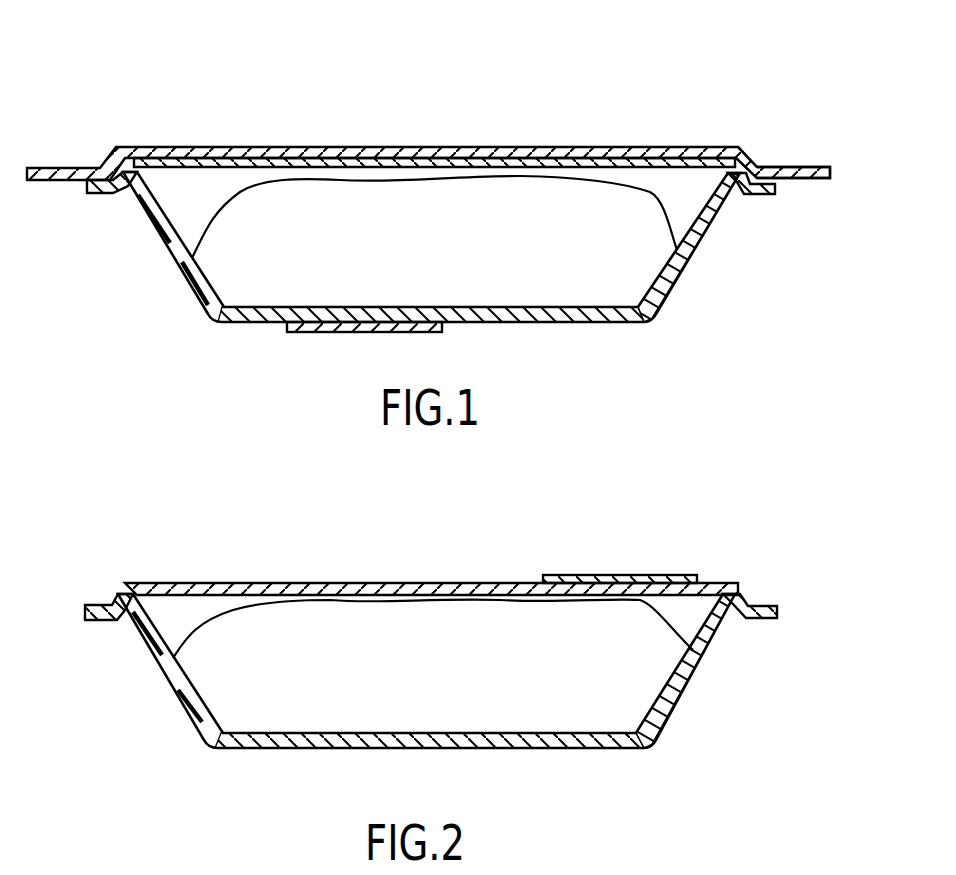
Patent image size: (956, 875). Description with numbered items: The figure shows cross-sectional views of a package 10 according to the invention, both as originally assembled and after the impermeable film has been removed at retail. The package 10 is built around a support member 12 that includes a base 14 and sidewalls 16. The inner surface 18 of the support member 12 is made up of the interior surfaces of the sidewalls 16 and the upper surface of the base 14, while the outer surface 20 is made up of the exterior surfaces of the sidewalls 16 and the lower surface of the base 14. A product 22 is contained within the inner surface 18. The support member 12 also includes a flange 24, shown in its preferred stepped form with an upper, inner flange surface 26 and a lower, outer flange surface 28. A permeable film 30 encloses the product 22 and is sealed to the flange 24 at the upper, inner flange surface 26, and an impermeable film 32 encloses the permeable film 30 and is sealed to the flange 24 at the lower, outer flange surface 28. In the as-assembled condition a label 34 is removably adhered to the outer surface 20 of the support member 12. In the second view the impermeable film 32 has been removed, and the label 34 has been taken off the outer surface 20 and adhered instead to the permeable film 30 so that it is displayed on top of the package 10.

In FIG. 1, the package 10 is at (693, 74).
In FIG. 2, the package 10 is at (727, 506).
In FIG. 1, the support member 12 is at (178, 294).
In FIG. 2, the support member 12 is at (690, 718).
In FIG. 1, the base 14 is at (262, 320).
In FIG. 2, the base 14 is at (287, 742).
In FIG. 1, the sidewalls 16 is at (148, 216).
In FIG. 2, the sidewalls 16 is at (175, 659).
In FIG. 1, the inner surface 18 is at (190, 200).
In FIG. 1, the outer surface 20 is at (684, 286).
In FIG. 2, the outer surface 20 is at (559, 762).
In FIG. 1, the product 22 is at (480, 230).
In FIG. 2, the product 22 is at (478, 658).
In FIG. 1, the flange 24 is at (800, 188).
In FIG. 1, the upper, inner flange surface 26 is at (762, 155).
In FIG. 1, the lower, outer flange surface 28 is at (790, 166).
In FIG. 1, the permeable film 30 is at (297, 147).
In FIG. 2, the permeable film 30 is at (365, 590).
In FIG. 1, the impermeable film 32 is at (405, 147).
In FIG. 1, the label 34 is at (337, 324).
In FIG. 2, the label 34 is at (607, 575).